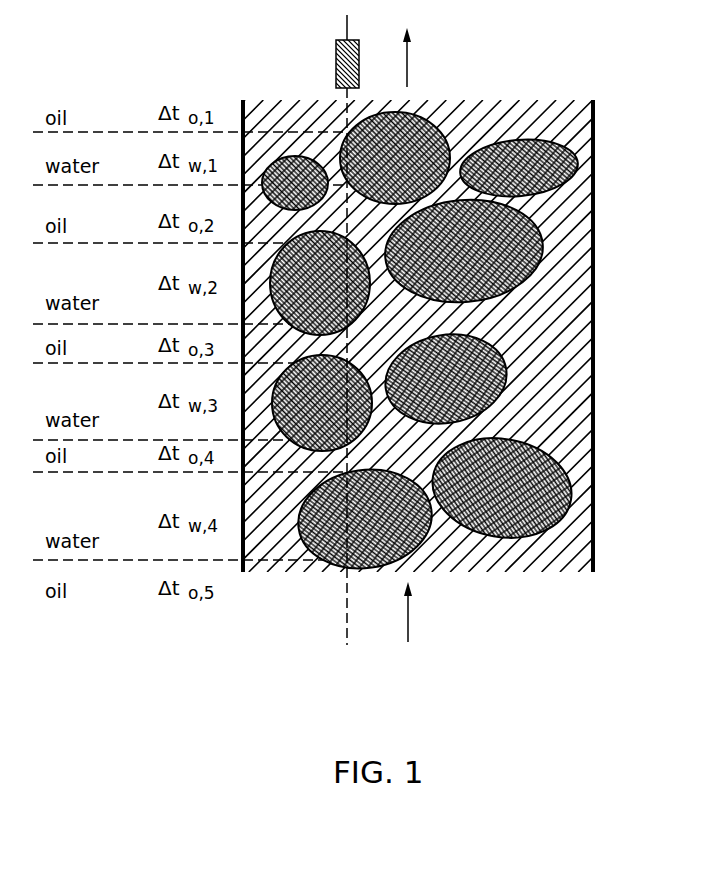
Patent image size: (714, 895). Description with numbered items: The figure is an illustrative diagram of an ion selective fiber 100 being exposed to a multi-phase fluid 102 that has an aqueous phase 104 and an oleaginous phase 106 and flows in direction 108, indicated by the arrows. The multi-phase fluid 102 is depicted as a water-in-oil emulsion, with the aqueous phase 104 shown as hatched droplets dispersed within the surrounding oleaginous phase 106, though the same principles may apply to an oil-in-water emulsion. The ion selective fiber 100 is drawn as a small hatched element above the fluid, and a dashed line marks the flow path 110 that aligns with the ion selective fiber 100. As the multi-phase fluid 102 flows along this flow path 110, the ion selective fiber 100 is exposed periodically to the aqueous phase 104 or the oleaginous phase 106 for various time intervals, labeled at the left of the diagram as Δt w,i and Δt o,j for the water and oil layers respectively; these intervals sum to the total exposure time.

The ion selective fiber 100 is at (335, 59).
The multi-phase fluid 102 is at (552, 590).
The aqueous phase 104 is at (483, 260).
The oleaginous phase 106 is at (560, 337).
The direction 108 is at (408, 64).
The flow path 110 is at (345, 634).